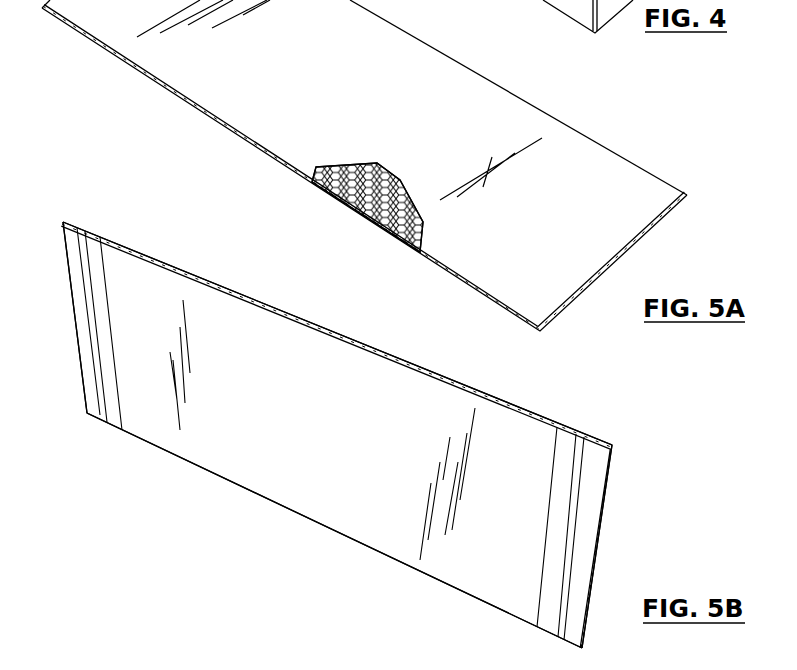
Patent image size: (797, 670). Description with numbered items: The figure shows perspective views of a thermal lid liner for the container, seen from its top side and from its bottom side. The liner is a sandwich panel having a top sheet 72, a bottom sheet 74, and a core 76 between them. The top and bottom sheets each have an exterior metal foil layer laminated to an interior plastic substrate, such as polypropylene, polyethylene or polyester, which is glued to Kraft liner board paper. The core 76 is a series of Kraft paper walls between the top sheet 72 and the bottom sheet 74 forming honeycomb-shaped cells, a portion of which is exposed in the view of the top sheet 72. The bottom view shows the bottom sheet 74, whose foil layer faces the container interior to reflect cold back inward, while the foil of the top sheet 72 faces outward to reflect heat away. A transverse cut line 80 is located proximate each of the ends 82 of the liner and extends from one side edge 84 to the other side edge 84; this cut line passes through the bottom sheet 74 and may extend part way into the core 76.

In FIG. 5A, the top sheet 72 is at (322, 76).
In FIG. 5A, the core 76 is at (348, 213).
In FIG. 5B, the bottom sheet 74 is at (282, 407).
In FIG. 5B, the transverse cut line 80 is at (92, 332).
In FIG. 5B, the end 82 is at (72, 308).
In FIG. 5B, the side edge 84 is at (333, 330).